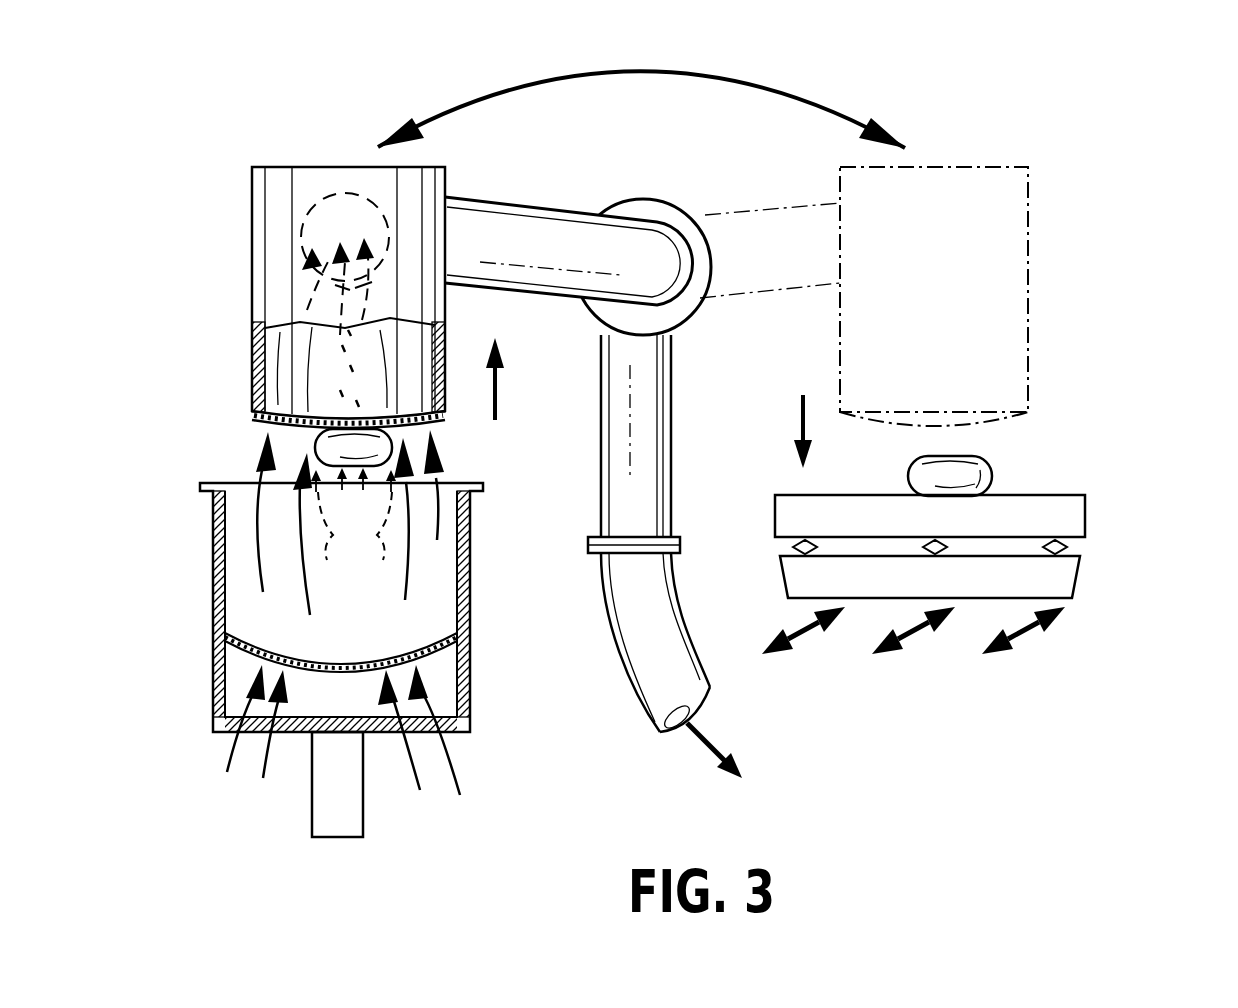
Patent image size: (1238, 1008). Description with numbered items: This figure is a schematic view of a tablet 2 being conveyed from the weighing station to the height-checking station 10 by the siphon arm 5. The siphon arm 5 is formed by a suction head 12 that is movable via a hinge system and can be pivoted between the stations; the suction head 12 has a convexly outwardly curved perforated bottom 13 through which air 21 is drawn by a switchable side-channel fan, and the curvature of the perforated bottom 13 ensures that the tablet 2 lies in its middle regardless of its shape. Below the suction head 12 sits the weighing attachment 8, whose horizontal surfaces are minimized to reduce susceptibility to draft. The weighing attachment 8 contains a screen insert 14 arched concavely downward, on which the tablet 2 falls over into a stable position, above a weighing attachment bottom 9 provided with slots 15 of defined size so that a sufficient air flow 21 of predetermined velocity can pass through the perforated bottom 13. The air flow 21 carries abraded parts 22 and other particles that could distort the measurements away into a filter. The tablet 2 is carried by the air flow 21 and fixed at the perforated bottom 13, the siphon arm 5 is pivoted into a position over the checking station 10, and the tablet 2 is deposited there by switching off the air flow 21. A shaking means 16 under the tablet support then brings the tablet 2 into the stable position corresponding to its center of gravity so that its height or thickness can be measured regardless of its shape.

The siphon arm 5 is at (312, 128).
The tablet 2 is at (324, 452).
The weighing attachment 8 is at (213, 606).
The weighing attachment bottom 9 is at (295, 723).
The perforated bottom 13 is at (338, 418).
The screen insert 14 is at (360, 642).
The slots 15 is at (400, 722).
The air flow 21 is at (452, 475).
The abraded parts 22 is at (355, 528).
The suction head 12 is at (1030, 380).
The height-checking station 10 is at (1147, 503).
The shaking means 16 is at (1066, 584).